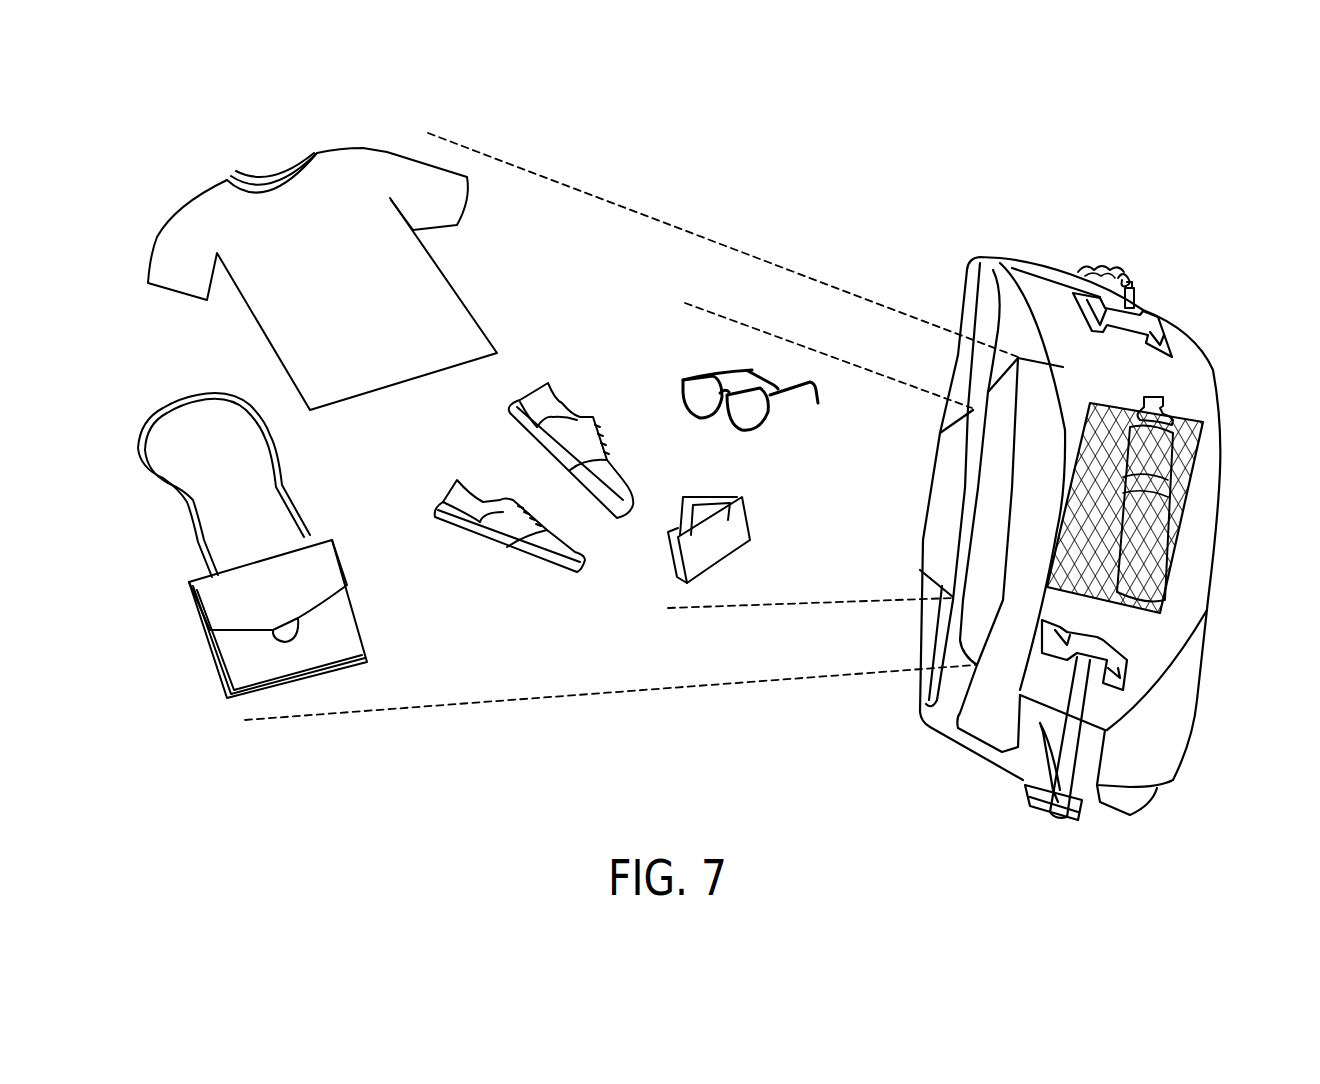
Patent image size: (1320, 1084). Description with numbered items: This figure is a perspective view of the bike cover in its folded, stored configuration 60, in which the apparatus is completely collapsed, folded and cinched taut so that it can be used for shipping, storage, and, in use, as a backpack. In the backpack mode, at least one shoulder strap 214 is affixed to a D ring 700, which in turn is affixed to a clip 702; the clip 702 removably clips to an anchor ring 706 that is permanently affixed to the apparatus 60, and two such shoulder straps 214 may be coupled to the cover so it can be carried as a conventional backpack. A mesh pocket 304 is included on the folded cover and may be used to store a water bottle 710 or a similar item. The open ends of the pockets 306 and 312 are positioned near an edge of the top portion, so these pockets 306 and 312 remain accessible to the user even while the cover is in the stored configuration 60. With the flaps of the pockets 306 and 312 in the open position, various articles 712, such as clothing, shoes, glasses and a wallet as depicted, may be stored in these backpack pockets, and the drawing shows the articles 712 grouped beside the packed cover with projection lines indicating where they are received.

The stored configuration 60 is at (948, 787).
The shoulder strap 214 is at (1070, 270).
The mesh pocket 304 is at (1198, 508).
The pocket 306 is at (965, 502).
The pocket 312 is at (1005, 570).
The D ring 700 is at (1100, 266).
The clip 702 is at (1124, 276).
The anchor ring 706 is at (1137, 290).
The water bottle 710 is at (1175, 415).
The articles 712 is at (820, 743).